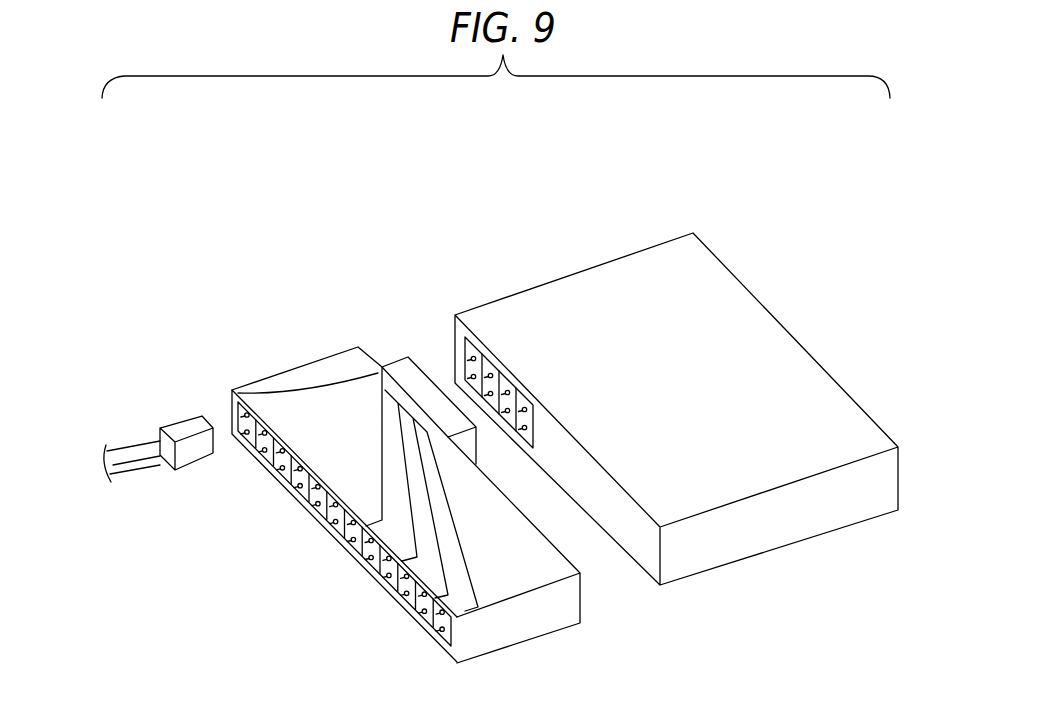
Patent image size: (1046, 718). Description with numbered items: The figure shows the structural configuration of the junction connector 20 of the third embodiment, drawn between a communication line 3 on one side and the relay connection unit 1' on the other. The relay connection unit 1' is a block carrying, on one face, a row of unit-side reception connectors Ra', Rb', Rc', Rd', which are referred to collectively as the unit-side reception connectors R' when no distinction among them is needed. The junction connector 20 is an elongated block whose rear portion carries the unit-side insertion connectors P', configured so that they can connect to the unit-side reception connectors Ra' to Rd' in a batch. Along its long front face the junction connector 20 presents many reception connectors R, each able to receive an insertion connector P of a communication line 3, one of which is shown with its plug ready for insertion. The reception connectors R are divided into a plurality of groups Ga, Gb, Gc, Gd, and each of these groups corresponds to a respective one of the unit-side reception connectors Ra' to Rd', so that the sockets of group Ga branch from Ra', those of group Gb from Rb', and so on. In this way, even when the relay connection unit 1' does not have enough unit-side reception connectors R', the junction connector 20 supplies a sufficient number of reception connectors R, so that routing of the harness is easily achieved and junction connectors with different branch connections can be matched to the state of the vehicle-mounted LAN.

The communication line 3 is at (141, 452).
The insertion connector P is at (185, 394).
The reception connector R is at (329, 482).
The junction connector 20 is at (316, 360).
The unit-side insertion connector P' is at (429, 356).
The unit-side reception connector R' is at (547, 286).
The unit-side reception connector Ra' is at (466, 296).
The unit-side reception connector Rb' is at (510, 291).
The unit-side reception connector Rc' is at (552, 292).
The unit-side reception connector Rd' is at (589, 295).
The relay connection unit 1' is at (676, 380).
The group of reception connectors Ga is at (358, 577).
The group of reception connectors Gb is at (360, 576).
The group of reception connectors Gc is at (430, 645).
The group of reception connectors Gd is at (438, 643).